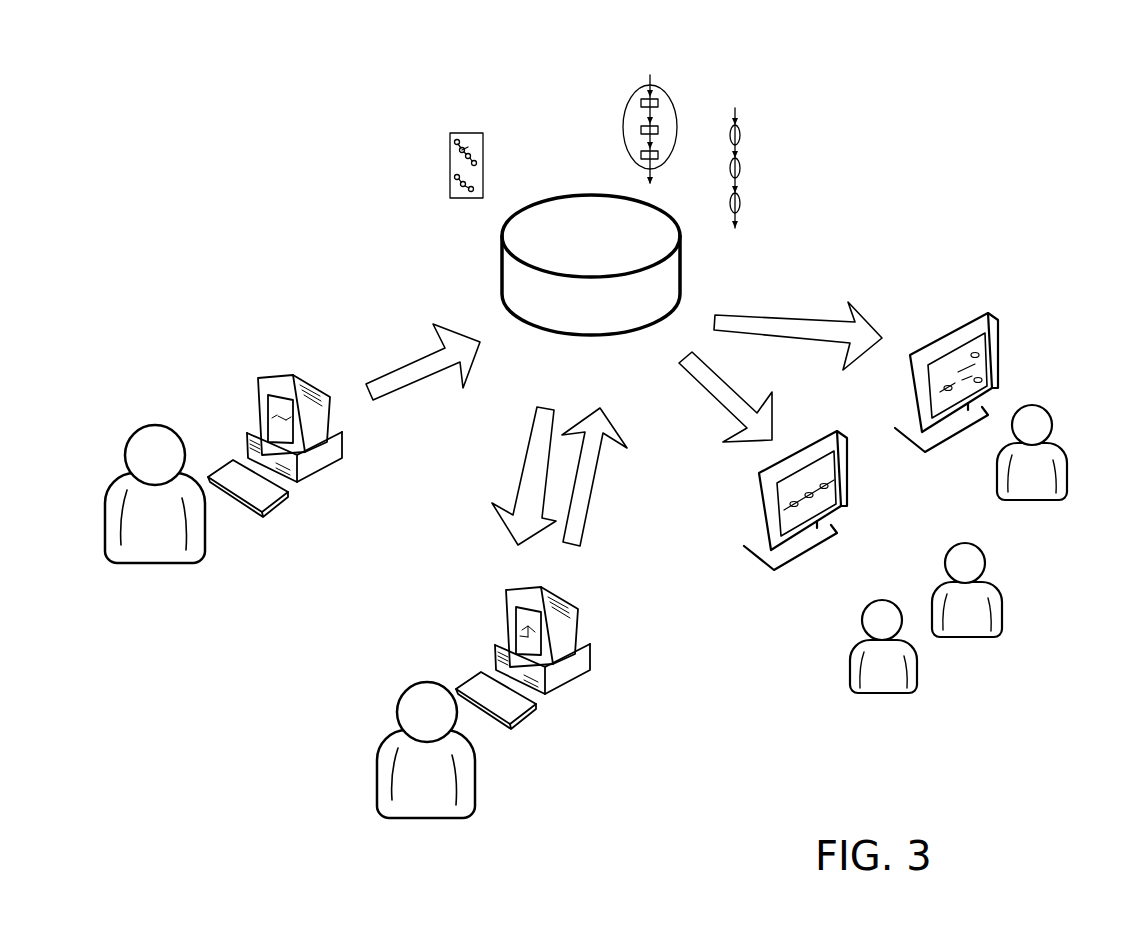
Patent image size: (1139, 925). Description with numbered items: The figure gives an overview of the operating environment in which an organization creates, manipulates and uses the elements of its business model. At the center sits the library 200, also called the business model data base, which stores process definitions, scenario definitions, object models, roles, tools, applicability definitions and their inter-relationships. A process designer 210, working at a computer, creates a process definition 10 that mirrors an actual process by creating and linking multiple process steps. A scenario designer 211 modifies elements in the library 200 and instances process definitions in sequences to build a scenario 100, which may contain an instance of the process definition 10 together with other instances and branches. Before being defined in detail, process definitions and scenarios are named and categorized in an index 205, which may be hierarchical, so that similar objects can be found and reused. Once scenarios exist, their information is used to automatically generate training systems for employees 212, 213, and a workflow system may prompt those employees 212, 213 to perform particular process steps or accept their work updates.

The process definition 10 is at (690, 59).
The scenario 100 is at (760, 93).
The library 200 is at (502, 258).
The index 205 is at (458, 90).
The process designer 210 is at (127, 557).
The scenario designer 211 is at (402, 815).
The employees 212 is at (1016, 626).
The employee 213 is at (1050, 495).